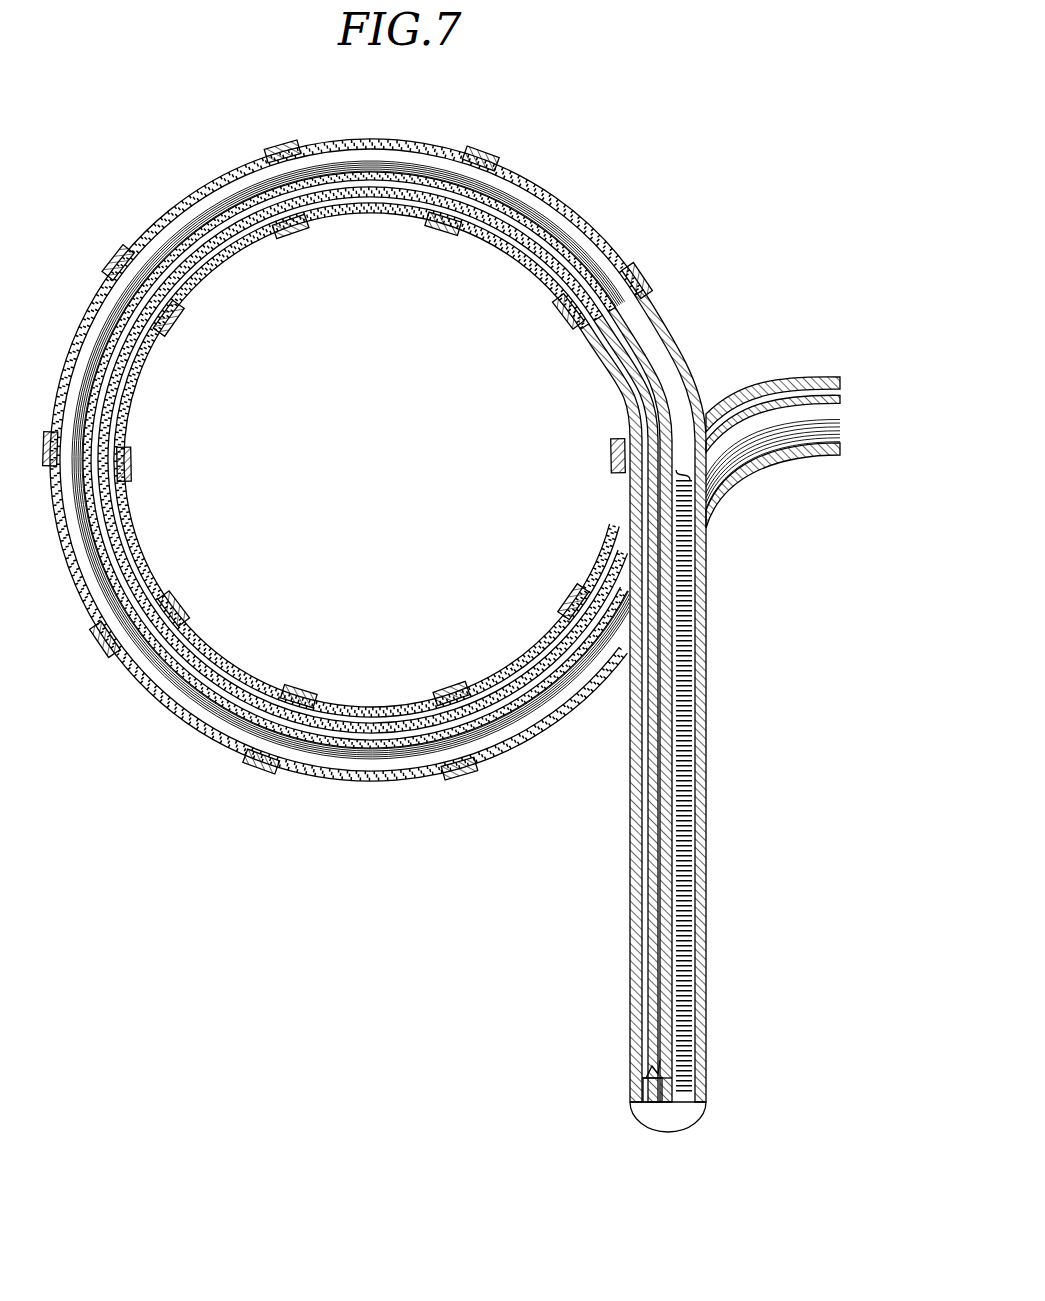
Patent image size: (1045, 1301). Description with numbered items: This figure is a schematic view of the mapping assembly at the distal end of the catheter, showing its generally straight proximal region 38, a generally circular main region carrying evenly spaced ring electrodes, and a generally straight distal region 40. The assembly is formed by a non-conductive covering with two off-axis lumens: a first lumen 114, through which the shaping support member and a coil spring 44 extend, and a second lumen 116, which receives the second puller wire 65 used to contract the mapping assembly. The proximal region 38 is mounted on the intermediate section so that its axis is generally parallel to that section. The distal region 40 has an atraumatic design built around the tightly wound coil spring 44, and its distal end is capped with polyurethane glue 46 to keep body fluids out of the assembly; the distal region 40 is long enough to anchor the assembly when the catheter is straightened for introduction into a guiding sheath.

The generally straight proximal region 38 is at (776, 378).
The generally straight distal region 40 is at (712, 696).
The coil spring 44 is at (706, 832).
The polyurethane glue 46 is at (667, 1116).
The second puller wire 65 is at (656, 897).
The first lumen 114 is at (803, 462).
The second lumen 116 is at (842, 388).